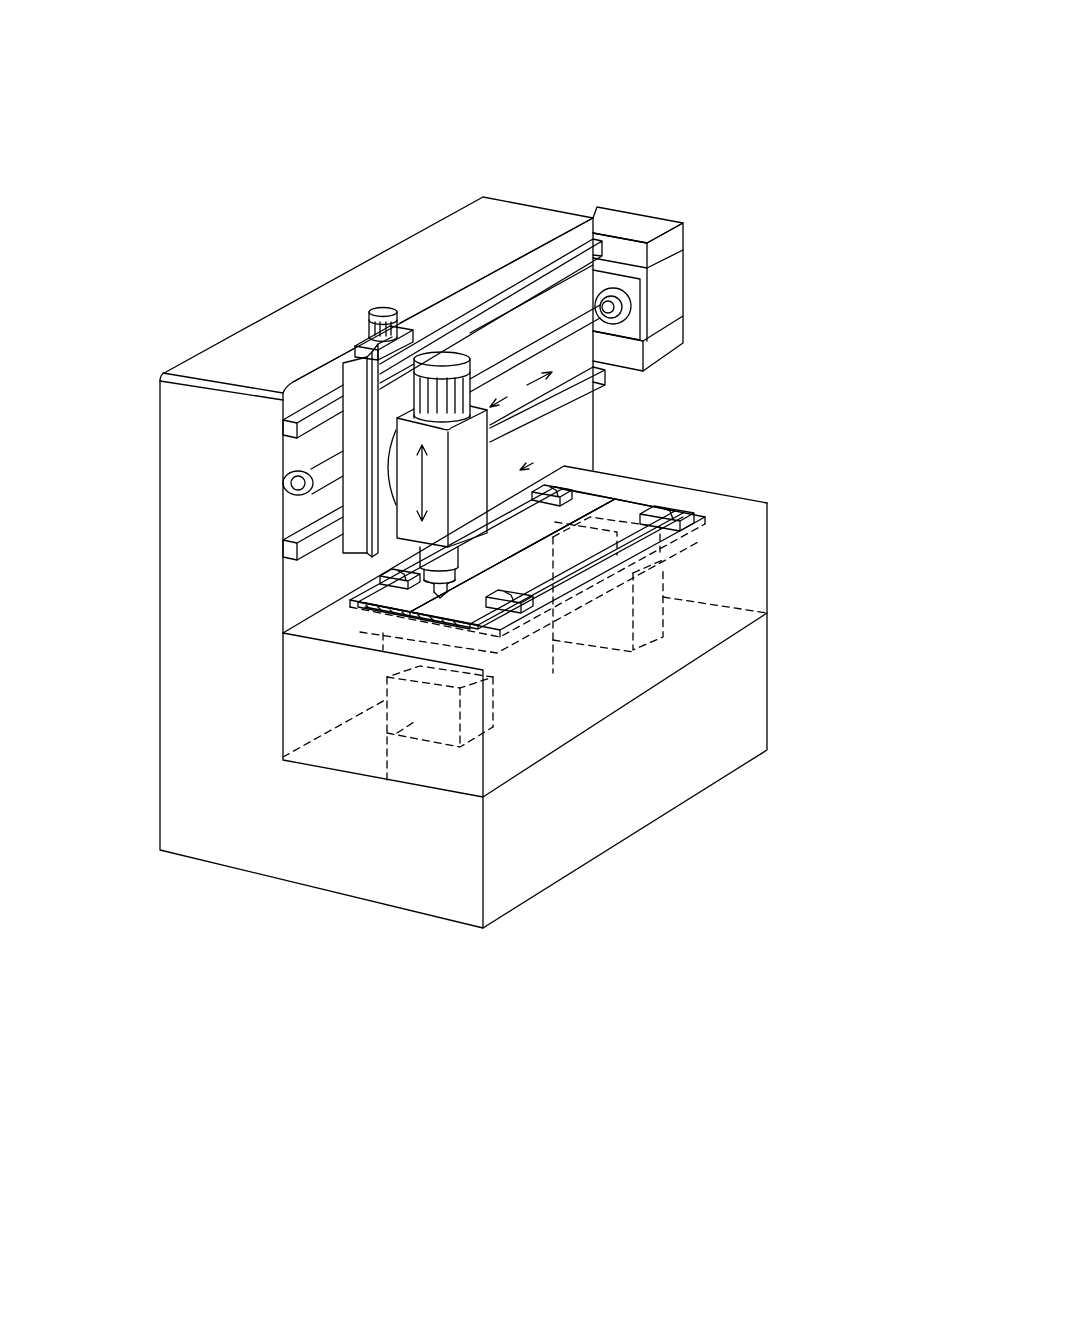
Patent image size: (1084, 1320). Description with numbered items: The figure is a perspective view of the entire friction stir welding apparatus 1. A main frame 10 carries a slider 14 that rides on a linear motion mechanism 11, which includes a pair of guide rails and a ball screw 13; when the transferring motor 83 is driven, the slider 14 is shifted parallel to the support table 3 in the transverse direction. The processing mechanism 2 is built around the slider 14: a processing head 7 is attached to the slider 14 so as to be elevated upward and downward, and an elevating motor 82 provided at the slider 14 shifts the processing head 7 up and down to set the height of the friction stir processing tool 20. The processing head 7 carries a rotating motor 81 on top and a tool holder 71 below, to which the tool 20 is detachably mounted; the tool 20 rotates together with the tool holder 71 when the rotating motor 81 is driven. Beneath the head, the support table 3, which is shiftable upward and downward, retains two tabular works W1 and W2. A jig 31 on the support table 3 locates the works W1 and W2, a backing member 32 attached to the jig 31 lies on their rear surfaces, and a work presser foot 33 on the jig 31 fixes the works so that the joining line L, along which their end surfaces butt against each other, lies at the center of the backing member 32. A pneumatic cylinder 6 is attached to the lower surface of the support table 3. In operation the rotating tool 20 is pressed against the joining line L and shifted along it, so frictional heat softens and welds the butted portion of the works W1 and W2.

The friction stir welding apparatus 1 is at (553, 136).
The processing mechanism 2 is at (548, 462).
The support table 3 is at (553, 665).
The pneumatic cylinder 6 is at (387, 780).
The processing head 7 is at (483, 466).
The main frame 10 is at (634, 784).
The linear motion mechanism 11 is at (109, 417).
The ball screw 13 is at (318, 472).
The slider 14 is at (395, 388).
The friction stir processing tool 20 is at (441, 596).
The jig 31 is at (365, 590).
The backing member 32 is at (370, 611).
The work presser foot 33 is at (662, 510).
The tool holder 71 is at (460, 572).
The rotating motor 81 is at (441, 357).
The elevating motor 82 is at (384, 308).
The transferring motor 83 is at (630, 222).
The joining line L is at (547, 541).
The work W1 is at (378, 583).
The work W2 is at (500, 610).